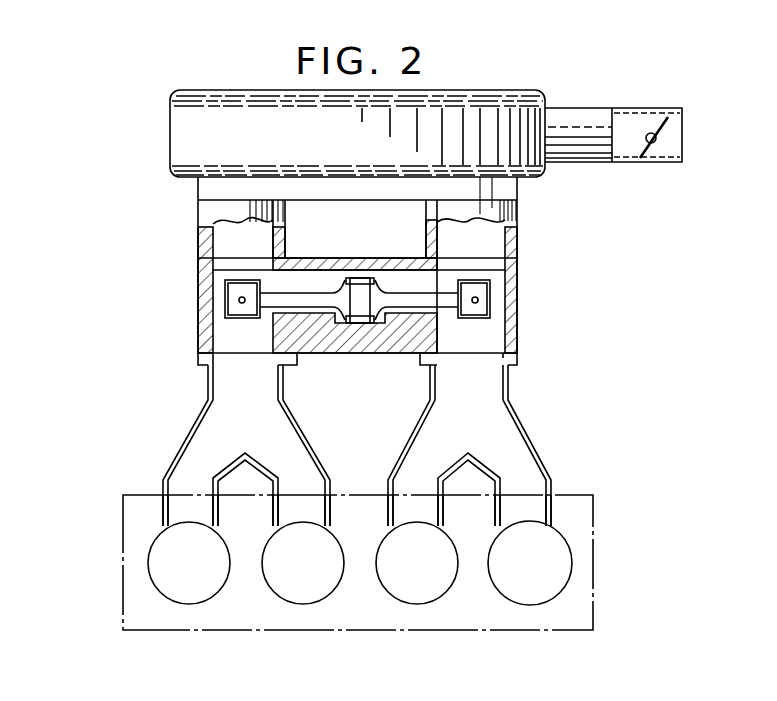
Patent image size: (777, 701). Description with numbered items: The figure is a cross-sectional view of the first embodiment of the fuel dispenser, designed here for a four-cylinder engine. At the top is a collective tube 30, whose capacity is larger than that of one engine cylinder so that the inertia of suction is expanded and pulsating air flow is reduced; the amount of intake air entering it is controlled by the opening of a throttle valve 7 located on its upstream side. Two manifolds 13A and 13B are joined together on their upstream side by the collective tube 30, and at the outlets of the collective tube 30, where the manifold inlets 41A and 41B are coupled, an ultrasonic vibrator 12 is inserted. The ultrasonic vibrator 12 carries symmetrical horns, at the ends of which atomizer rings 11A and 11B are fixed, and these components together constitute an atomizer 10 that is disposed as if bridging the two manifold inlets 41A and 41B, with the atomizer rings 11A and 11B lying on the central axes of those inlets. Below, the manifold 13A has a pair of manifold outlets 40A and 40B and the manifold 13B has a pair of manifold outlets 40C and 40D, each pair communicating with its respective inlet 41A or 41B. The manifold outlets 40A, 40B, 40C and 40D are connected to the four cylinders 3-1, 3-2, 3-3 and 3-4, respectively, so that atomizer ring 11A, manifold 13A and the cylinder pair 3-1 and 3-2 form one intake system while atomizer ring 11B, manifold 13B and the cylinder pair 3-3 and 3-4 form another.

The collective tube 30 is at (545, 100).
The throttle valve 7 is at (653, 108).
The atomizer 10 is at (379, 293).
The ultrasonic vibrator 12 is at (352, 302).
The atomizer ring 11A is at (226, 300).
The atomizer ring 11B is at (490, 300).
The manifold inlet 41A is at (238, 353).
The manifold inlet 41B is at (475, 353).
The manifold 13A is at (190, 441).
The manifold 13B is at (530, 449).
The manifold outlet 40A is at (190, 495).
The manifold outlet 40B is at (300, 495).
The manifold outlet 40C is at (417, 495).
The manifold outlet 40D is at (525, 495).
The cylinder 3-1 is at (150, 576).
The cylinder 3-2 is at (266, 587).
The cylinder 3-3 is at (378, 587).
The cylinder 3-4 is at (492, 585).